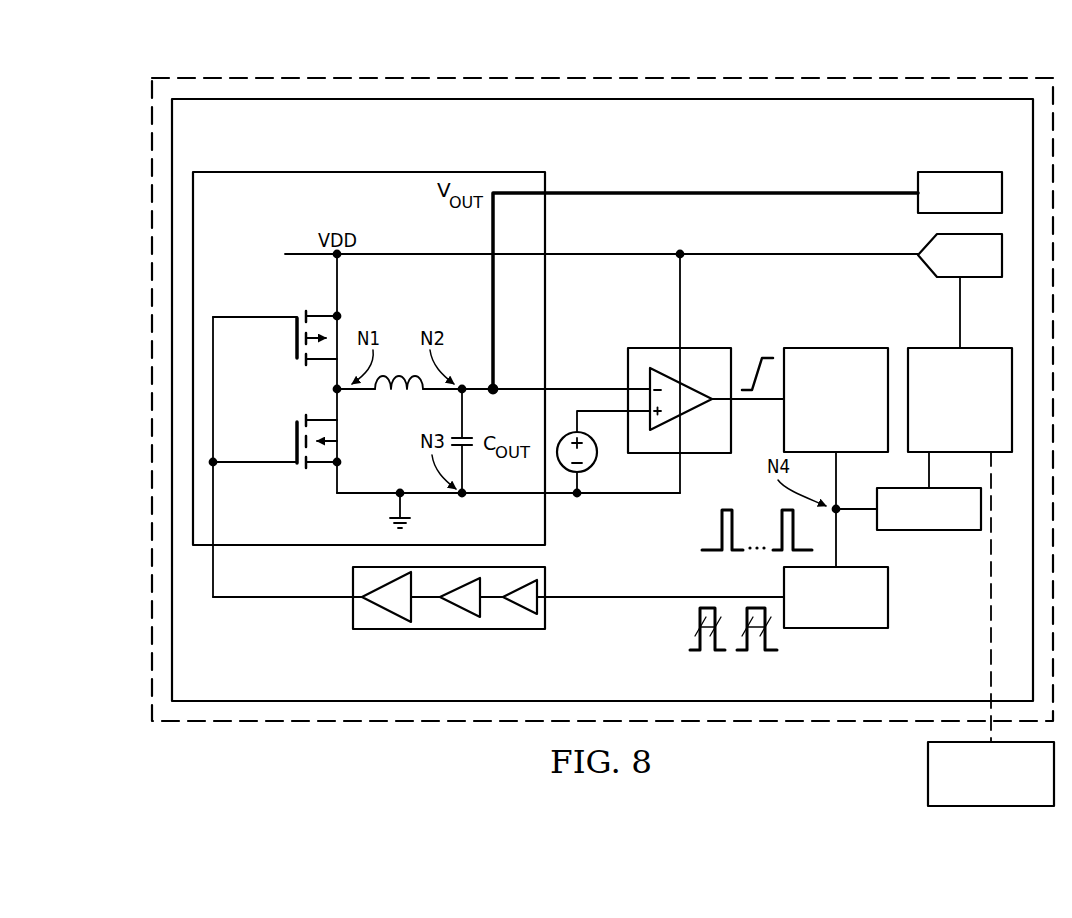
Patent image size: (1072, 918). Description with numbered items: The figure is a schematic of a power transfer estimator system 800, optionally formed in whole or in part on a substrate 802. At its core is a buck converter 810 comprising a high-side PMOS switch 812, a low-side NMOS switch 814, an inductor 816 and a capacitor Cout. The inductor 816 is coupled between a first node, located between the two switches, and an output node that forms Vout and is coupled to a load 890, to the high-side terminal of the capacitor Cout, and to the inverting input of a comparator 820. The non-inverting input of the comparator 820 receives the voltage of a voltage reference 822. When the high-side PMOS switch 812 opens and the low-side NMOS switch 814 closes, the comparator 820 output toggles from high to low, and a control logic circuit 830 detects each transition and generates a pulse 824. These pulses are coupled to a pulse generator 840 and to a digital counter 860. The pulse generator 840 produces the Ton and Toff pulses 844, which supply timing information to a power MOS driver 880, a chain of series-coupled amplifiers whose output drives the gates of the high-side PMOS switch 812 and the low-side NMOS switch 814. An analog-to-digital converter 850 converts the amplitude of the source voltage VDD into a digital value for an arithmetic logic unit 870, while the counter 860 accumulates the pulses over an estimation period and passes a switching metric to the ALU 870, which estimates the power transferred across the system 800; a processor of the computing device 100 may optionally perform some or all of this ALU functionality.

The computing device 100 is at (1000, 806).
The power transfer estimator system 800 is at (741, 147).
The substrate 802 is at (477, 74).
The buck converter 810 is at (311, 168).
The high-side PMOS switch 812 is at (297, 348).
The low-side NMOS switch 814 is at (297, 438).
The inductor 816 is at (405, 373).
The comparator 820 is at (697, 345).
The voltage reference 822 is at (597, 455).
The pulse 824 is at (708, 555).
The control logic circuit 830 is at (844, 345).
The pulse generator 840 is at (888, 608).
The Ton and Toff pulses 844 is at (688, 640).
The analog-to-digital converter 850 is at (978, 278).
The digital counter 860 is at (940, 530).
The arithmetic logic unit 870 is at (980, 430).
The power MOS driver 880 is at (349, 608).
The load 890 is at (960, 171).